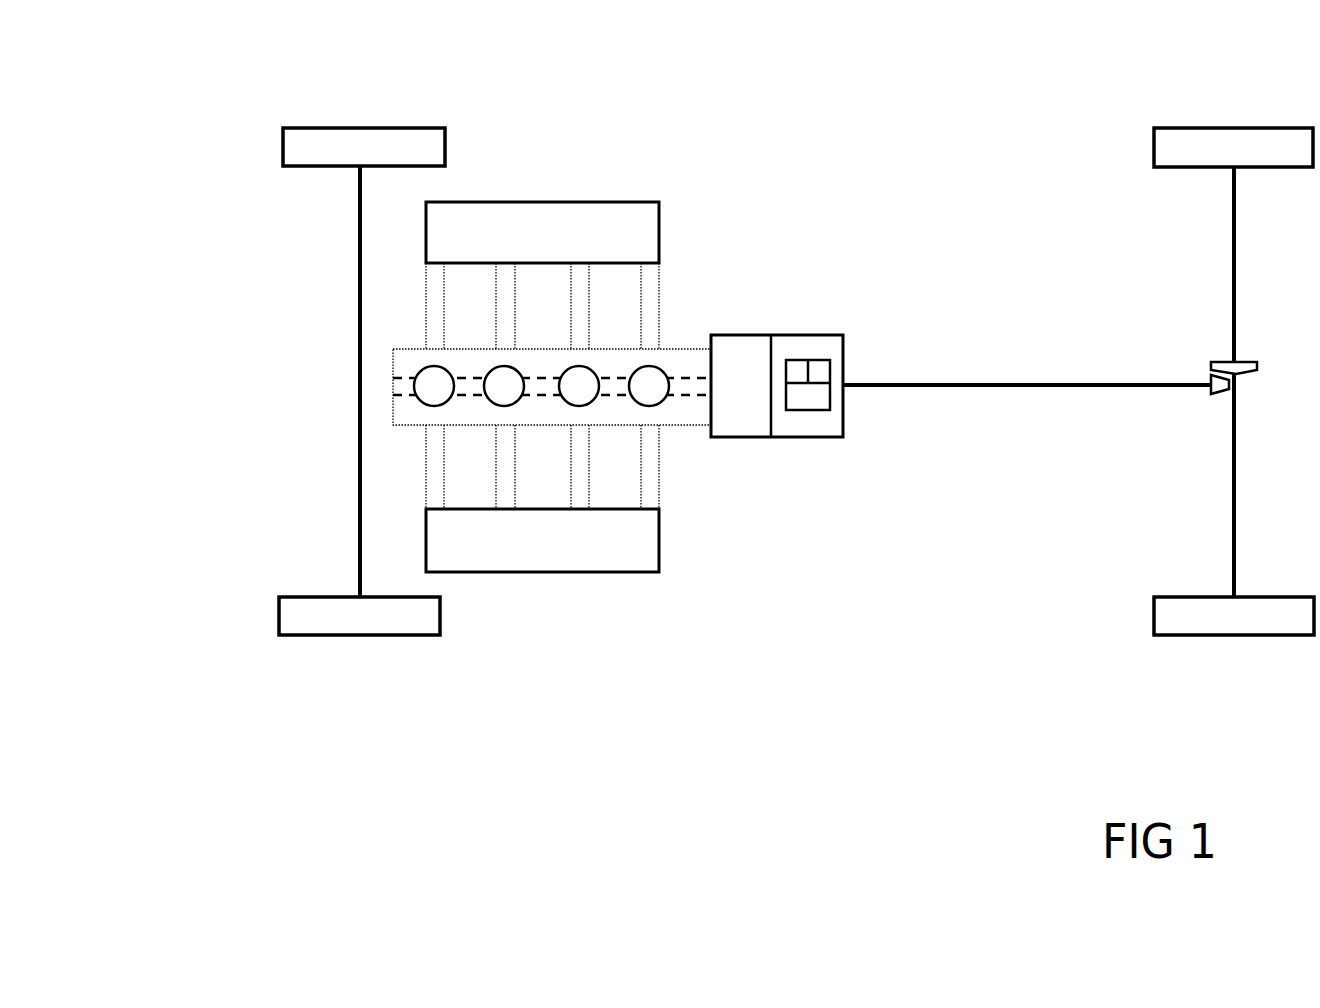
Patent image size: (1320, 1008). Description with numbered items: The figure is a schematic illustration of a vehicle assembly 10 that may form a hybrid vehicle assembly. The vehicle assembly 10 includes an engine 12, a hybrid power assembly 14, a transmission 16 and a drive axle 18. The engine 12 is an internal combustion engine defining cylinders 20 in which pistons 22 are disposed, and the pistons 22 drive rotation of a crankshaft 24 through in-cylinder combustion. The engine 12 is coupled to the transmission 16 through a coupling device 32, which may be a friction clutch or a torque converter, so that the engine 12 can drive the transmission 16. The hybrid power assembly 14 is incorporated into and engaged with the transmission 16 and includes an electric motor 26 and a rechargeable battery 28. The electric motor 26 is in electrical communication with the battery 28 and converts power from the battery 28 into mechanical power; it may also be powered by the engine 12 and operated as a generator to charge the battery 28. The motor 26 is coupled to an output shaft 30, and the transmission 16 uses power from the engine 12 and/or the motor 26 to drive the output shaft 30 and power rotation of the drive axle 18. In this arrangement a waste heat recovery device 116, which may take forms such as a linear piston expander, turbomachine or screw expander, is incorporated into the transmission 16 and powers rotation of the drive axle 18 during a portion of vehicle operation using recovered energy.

The vehicle assembly 10 is at (195, 143).
The engine 12 is at (618, 176).
The hybrid power assembly 14 is at (808, 336).
The transmission 16 is at (808, 437).
The drive axle 18 is at (1233, 236).
The cylinders 20 is at (496, 404).
The pistons 22 is at (541, 386).
The crankshaft 24 is at (403, 375).
The electric motor 26 is at (830, 360).
The rechargeable battery 28 is at (790, 360).
The output shaft 30 is at (1018, 387).
The coupling device 32 is at (729, 403).
The waste heat recovery device 116 is at (822, 410).